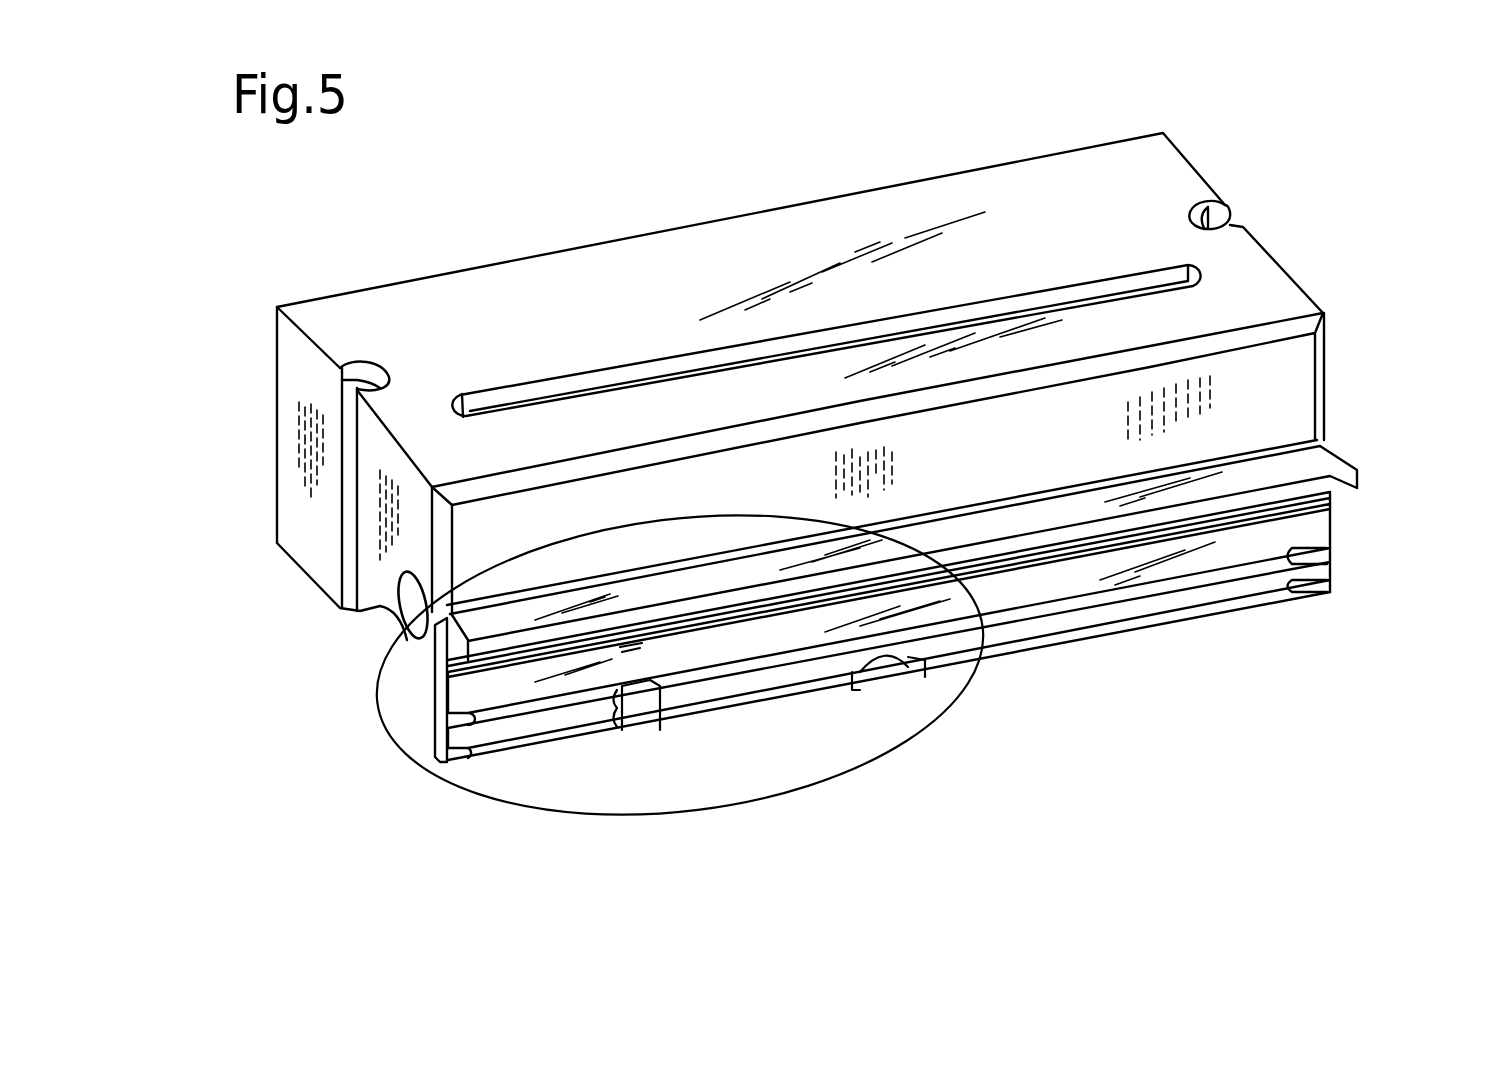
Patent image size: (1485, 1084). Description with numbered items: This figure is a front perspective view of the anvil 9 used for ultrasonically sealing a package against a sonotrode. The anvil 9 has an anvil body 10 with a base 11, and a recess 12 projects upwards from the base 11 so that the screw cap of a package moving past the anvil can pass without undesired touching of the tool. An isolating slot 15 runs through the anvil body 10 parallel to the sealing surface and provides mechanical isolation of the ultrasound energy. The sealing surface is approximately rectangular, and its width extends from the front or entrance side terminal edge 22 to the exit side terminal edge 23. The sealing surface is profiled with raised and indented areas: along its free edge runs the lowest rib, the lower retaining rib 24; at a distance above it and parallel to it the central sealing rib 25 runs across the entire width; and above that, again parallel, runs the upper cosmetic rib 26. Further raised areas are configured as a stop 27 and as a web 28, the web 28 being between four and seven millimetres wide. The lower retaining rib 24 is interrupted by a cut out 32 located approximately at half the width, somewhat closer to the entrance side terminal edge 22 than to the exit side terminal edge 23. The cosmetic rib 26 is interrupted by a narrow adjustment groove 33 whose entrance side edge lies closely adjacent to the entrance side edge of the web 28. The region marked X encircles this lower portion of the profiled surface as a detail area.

The anvil 9 is at (1160, 182).
The anvil body 10 is at (852, 464).
The base 11 is at (300, 570).
The recess 12 is at (380, 617).
The isolating slot 15 is at (587, 387).
The entrance side terminal edge 22 is at (445, 733).
The exit side terminal edge 23 is at (1333, 530).
The lower retaining rib 24 is at (1023, 648).
The central sealing rib 25 is at (1122, 597).
The upper cosmetic rib 26 is at (1213, 540).
The stop 27 is at (1330, 463).
The web 28 is at (645, 712).
The cut out 32 is at (890, 657).
The adjustment groove 33 is at (627, 653).
The detail region X is at (480, 807).